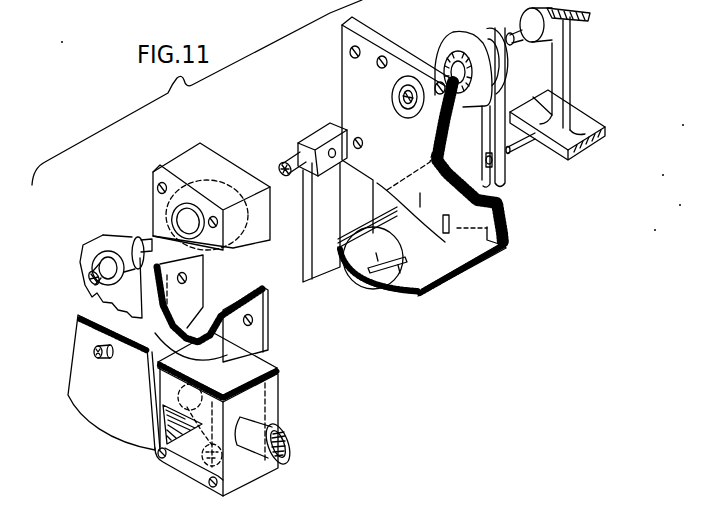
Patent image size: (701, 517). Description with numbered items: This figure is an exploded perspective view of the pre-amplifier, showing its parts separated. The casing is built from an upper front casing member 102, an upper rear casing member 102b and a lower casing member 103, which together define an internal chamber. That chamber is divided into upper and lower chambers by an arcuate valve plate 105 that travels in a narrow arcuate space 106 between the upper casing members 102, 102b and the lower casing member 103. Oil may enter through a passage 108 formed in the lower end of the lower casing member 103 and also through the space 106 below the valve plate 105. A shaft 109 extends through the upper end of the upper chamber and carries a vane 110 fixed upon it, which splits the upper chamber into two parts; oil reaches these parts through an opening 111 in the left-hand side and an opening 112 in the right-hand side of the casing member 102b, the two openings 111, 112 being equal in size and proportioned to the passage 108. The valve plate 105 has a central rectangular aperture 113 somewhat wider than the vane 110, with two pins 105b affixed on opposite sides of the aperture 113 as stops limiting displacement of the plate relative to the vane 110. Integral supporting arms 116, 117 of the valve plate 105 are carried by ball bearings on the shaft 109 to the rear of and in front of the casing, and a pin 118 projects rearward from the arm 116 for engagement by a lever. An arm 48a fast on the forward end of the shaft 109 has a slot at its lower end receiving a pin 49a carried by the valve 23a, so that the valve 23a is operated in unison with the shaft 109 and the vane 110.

The upper front casing member 102 is at (342, 62).
The upper rear casing member 102b is at (173, 160).
The lower casing member 103 is at (273, 405).
The arcuate valve plate 105 is at (470, 263).
The pins 105b is at (390, 292).
The arcuate space 106 is at (277, 366).
The passage 108 is at (200, 458).
The shaft 109 is at (148, 242).
The vane 110 is at (310, 193).
The opening 111 is at (186, 278).
The opening 112 is at (255, 318).
The central rectangular aperture 113 is at (400, 232).
The supporting arm 116 is at (100, 407).
The supporting arm 117 is at (509, 227).
The pin 118 is at (95, 349).
The valve 23a is at (597, 138).
The arm 48a is at (503, 188).
The pin 49a is at (523, 157).